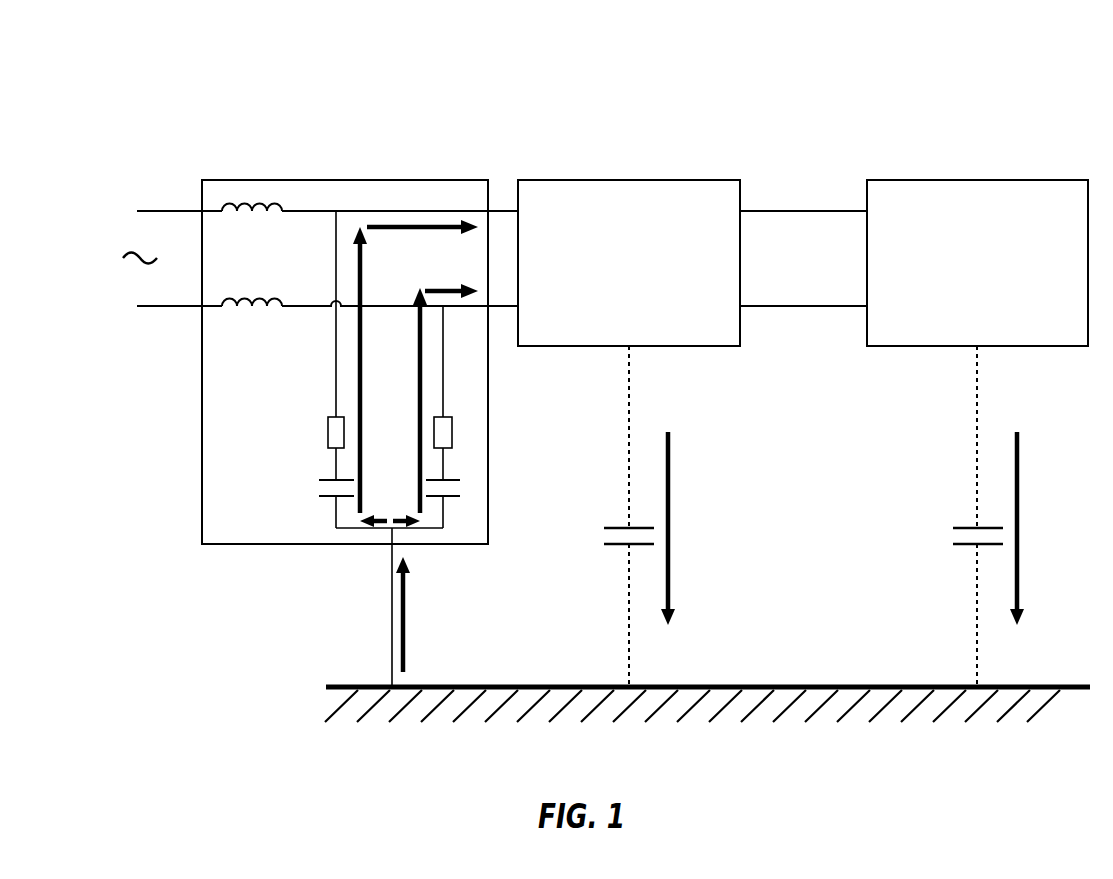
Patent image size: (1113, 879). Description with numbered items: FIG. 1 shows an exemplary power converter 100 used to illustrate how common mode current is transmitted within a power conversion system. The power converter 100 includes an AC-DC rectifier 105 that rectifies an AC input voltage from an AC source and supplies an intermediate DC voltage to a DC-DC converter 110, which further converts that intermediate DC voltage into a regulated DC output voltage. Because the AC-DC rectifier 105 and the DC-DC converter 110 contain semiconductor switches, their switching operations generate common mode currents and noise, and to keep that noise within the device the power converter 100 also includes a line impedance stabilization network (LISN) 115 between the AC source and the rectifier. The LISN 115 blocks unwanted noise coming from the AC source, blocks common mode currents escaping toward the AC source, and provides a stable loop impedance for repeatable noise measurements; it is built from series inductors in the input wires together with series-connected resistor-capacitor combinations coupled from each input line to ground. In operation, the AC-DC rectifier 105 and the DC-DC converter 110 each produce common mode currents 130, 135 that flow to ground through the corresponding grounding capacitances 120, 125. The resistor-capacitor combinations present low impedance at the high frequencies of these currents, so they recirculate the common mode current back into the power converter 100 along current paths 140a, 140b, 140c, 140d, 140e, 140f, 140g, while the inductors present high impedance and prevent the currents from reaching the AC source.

The power converter 100 is at (168, 64).
The AC-DC rectifier 105 is at (617, 258).
The DC-DC converter 110 is at (965, 258).
The line impedance stabilization network (LISN) 115 is at (357, 173).
The grounding capacitance 120 is at (612, 527).
The grounding capacitance 125 is at (962, 527).
The common mode current 130 is at (671, 490).
The common mode current 135 is at (1020, 490).
The current path 140a is at (405, 640).
The current path 140b is at (369, 515).
The current path 140c is at (408, 515).
The current path 140d is at (362, 338).
The current path 140e is at (418, 412).
The current path 140f is at (438, 233).
The current path 140g is at (432, 285).